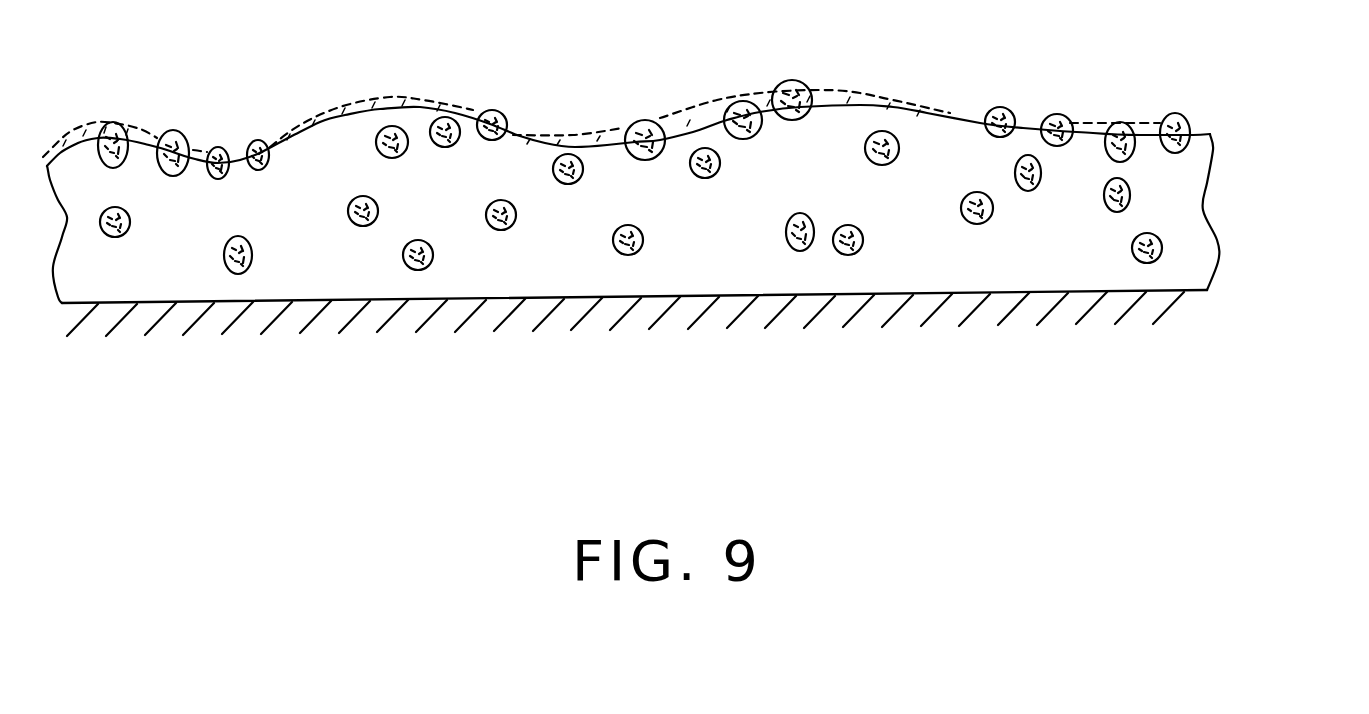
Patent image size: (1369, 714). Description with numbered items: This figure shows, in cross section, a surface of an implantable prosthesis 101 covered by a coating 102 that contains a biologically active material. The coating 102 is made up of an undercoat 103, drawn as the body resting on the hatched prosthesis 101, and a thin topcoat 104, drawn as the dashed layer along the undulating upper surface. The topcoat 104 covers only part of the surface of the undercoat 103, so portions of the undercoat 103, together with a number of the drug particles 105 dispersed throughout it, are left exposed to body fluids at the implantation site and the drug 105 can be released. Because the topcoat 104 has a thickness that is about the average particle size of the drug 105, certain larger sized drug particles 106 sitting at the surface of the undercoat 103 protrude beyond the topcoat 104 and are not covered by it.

The prosthesis 101 is at (548, 354).
The coating 102 is at (1174, 190).
The undercoat 103 is at (964, 256).
The topcoat 104 is at (341, 108).
The drug particles 105 is at (433, 233).
The larger sized drug particles 106 is at (815, 72).